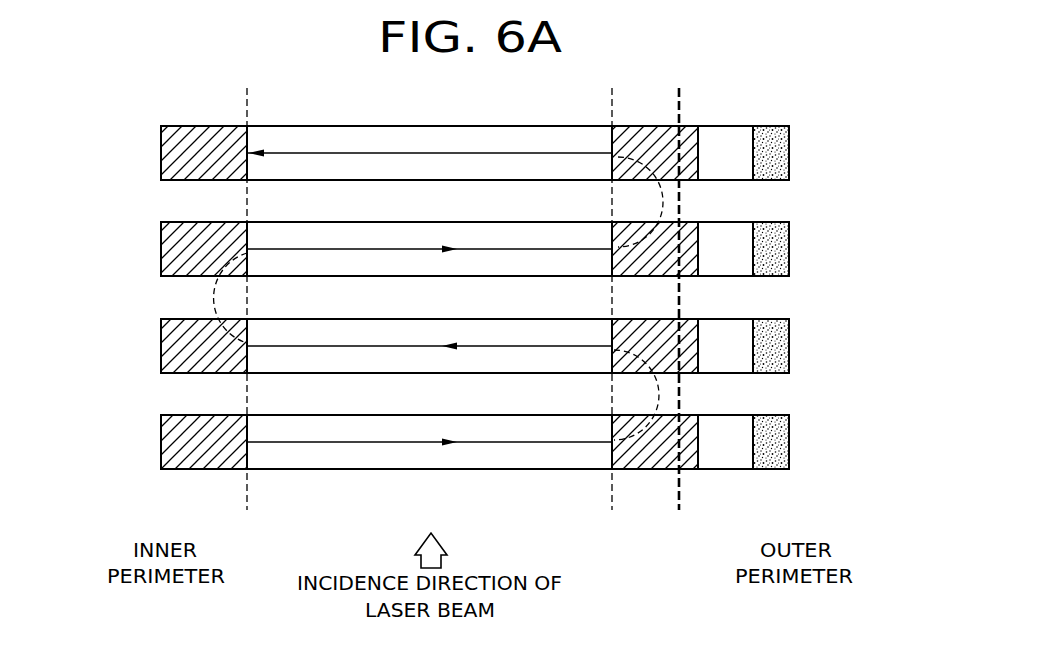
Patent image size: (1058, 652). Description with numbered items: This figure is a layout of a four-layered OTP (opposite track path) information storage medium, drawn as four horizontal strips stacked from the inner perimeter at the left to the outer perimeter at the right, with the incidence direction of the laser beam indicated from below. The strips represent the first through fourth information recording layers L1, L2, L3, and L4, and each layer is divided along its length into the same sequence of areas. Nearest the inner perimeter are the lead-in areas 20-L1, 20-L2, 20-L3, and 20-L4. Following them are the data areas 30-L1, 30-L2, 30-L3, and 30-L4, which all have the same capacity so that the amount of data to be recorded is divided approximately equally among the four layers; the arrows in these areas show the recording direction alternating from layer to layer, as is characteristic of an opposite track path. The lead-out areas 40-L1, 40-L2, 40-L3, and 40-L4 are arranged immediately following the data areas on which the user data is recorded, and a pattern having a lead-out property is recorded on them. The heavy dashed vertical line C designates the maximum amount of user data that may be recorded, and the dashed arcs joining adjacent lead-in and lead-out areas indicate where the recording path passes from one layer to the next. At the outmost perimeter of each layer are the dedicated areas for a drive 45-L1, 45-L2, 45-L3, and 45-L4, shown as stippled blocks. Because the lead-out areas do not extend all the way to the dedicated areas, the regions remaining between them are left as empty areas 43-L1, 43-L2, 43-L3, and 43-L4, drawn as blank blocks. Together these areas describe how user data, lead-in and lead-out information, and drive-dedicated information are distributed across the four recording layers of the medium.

The lead-in area 20-L4 is at (163, 131).
The lead-in area 20-L3 is at (163, 227).
The lead-in area 20-L2 is at (163, 324).
The lead-in area 20-L1 is at (163, 420).
The data area 30-L4 is at (297, 127).
The data area 30-L3 is at (381, 235).
The data area 30-L2 is at (380, 358).
The data area 30-L1 is at (298, 455).
The lead-out area 40-L4 is at (645, 128).
The lead-out area 40-L3 is at (612, 234).
The lead-out area 40-L2 is at (617, 359).
The lead-out area 40-L1 is at (643, 460).
The empty area 43-L4 is at (735, 140).
The empty area 43-L3 is at (735, 237).
The empty area 43-L2 is at (735, 334).
The empty area 43-L1 is at (735, 430).
The dedicated area for a drive 45-L4 is at (790, 135).
The dedicated area for a drive 45-L3 is at (790, 231).
The dedicated area for a drive 45-L2 is at (790, 328).
The dedicated area for a drive 45-L1 is at (790, 425).
The fourth information recording layer L4 is at (495, 153).
The third information recording layer L3 is at (495, 249).
The second information recording layer L2 is at (495, 346).
The first information recording layer L1 is at (495, 442).
The maximum amount of user data C is at (679, 115).